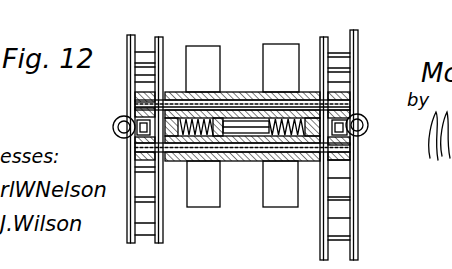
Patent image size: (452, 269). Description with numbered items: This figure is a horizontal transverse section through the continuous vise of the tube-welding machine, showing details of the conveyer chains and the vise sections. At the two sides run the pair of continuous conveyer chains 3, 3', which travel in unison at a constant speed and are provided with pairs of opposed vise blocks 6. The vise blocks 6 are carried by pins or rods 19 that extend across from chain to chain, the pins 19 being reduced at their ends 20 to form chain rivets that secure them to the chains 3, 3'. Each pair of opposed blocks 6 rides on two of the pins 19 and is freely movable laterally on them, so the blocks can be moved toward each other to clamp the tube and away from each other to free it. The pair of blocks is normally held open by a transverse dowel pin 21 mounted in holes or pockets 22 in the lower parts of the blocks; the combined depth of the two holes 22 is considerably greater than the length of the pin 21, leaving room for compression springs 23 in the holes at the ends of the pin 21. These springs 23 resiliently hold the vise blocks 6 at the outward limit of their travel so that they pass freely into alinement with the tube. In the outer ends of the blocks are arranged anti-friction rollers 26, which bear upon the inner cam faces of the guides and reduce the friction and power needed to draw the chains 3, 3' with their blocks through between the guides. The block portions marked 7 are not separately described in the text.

The conveyer chain 3 is at (130, 139).
The conveyer chain 3' is at (351, 145).
The vise block 6 is at (195, 92).
The bracket block 7 is at (210, 47).
The pin 19 is at (237, 100).
The reduced end 20 is at (125, 106).
The dowel pin 21 is at (255, 135).
The hole 22 is at (206, 146).
The compression spring 23 is at (272, 118).
The anti-friction roller 26 is at (116, 126).